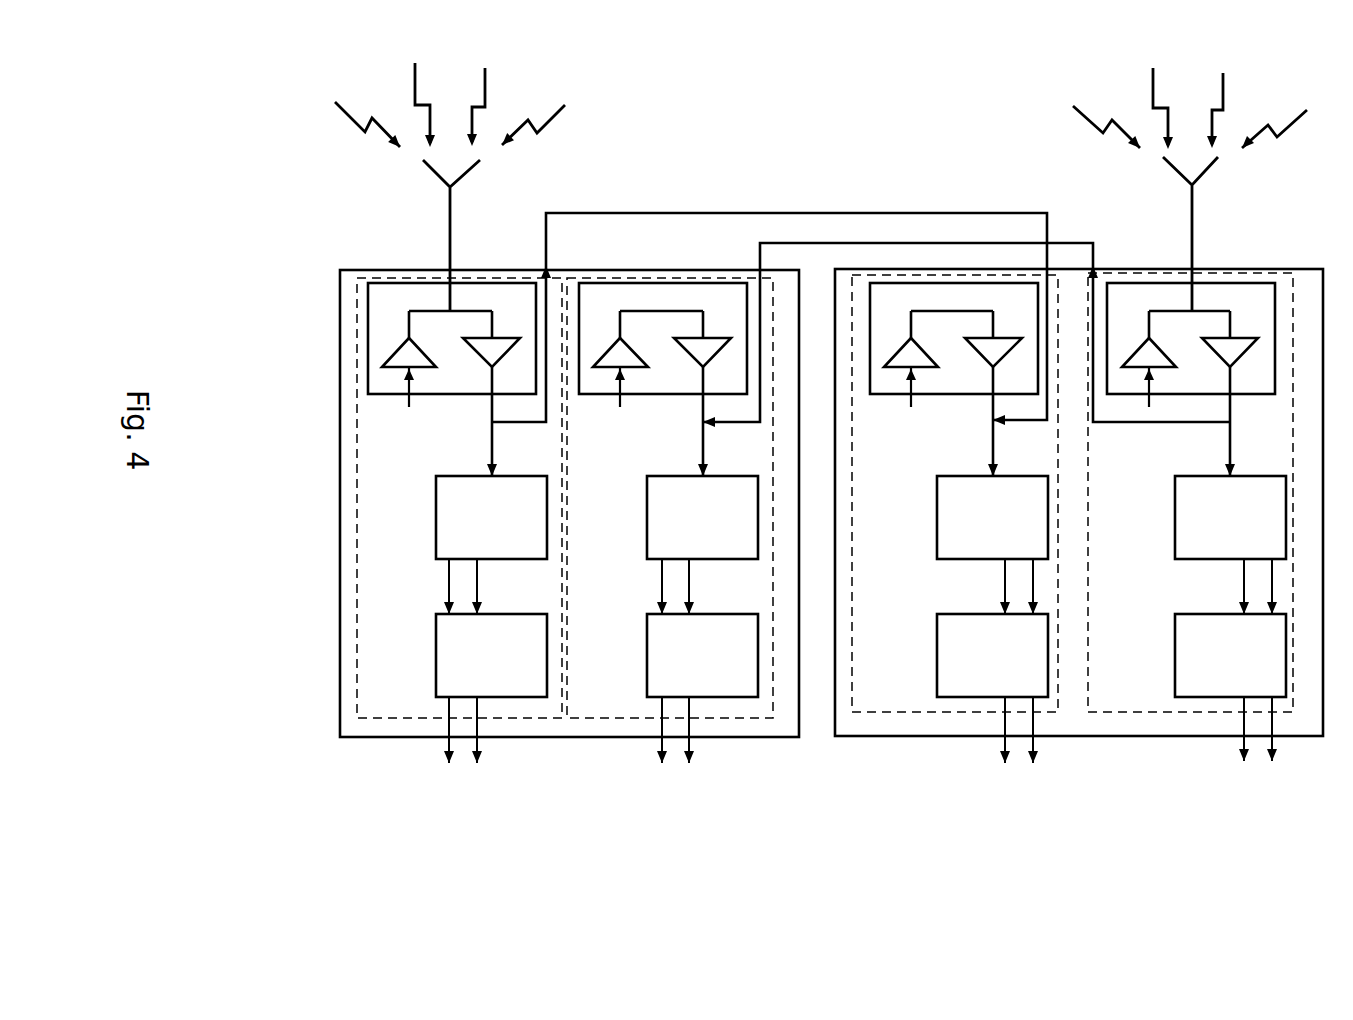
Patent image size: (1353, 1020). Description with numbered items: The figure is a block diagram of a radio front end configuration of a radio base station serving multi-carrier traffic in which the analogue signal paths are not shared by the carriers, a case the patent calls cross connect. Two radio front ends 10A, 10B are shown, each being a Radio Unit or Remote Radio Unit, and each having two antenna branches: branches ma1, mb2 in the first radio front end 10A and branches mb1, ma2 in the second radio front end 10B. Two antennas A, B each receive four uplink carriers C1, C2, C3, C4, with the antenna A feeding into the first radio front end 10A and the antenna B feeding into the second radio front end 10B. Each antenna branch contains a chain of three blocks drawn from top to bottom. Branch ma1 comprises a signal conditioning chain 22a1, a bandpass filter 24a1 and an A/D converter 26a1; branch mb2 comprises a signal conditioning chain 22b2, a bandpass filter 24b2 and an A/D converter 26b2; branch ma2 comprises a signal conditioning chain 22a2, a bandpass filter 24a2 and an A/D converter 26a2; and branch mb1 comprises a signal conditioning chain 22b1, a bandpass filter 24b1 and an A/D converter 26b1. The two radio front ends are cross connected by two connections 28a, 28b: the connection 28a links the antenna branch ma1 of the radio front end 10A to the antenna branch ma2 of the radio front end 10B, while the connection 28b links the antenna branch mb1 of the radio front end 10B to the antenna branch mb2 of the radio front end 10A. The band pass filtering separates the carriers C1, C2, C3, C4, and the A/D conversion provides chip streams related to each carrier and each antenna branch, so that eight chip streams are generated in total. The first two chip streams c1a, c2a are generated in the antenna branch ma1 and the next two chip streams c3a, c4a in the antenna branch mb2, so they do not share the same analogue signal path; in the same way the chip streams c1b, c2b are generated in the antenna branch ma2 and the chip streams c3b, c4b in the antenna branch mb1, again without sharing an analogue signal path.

The radio front end 10A is at (777, 740).
The radio front end 10B is at (905, 737).
The signal conditioning chain 22a1 is at (410, 278).
The signal conditioning chain 22b2 is at (600, 285).
The signal conditioning chain 22a2 is at (880, 393).
The signal conditioning chain 22b1 is at (1240, 282).
The bandpass filter 24a1 is at (435, 505).
The bandpass filter 24b2 is at (647, 505).
The bandpass filter 24a2 is at (937, 515).
The bandpass filter 24b1 is at (1175, 517).
The A/D converter 26a1 is at (436, 637).
The A/D converter 26b2 is at (647, 637).
The A/D converter 26a2 is at (937, 655).
The A/D converter 26b1 is at (1175, 648).
The connection 28a is at (710, 213).
The connection 28b is at (850, 243).
The antenna branch ma1 is at (410, 718).
The antenna branch mb2 is at (610, 718).
The antenna branch ma2 is at (960, 712).
The antenna branch mb1 is at (1175, 712).
The antenna A is at (455, 215).
The antenna B is at (1188, 215).
The uplink carrier C1 is at (723, 108).
The uplink carrier C2 is at (781, 89).
The uplink carrier C3 is at (852, 88).
The uplink carrier C4 is at (908, 111).
The chip stream c1a is at (440, 745).
The chip stream c2a is at (497, 746).
The chip stream c1b is at (658, 746).
The chip stream c2b is at (710, 746).
The chip stream c3a is at (989, 743).
The chip stream c4a is at (1050, 743).
The chip stream c3b is at (1228, 743).
The chip stream c4b is at (1285, 743).